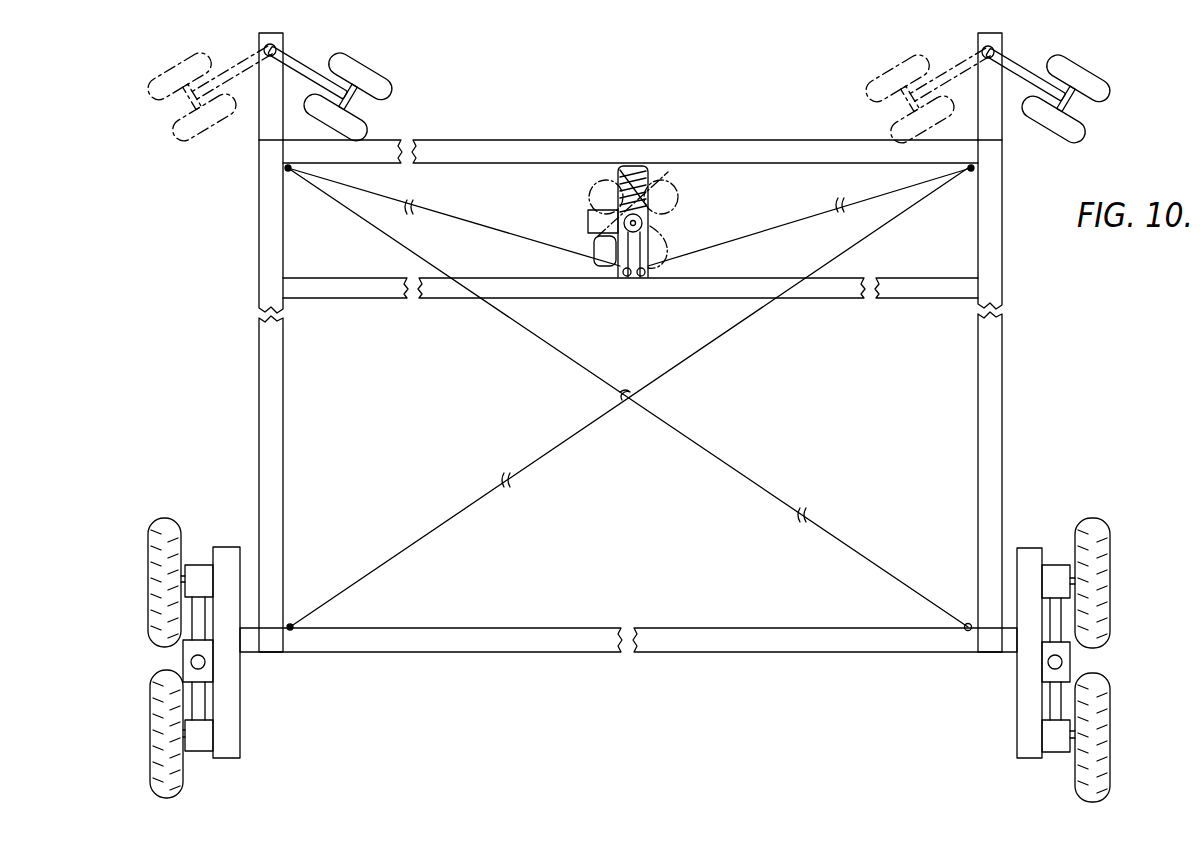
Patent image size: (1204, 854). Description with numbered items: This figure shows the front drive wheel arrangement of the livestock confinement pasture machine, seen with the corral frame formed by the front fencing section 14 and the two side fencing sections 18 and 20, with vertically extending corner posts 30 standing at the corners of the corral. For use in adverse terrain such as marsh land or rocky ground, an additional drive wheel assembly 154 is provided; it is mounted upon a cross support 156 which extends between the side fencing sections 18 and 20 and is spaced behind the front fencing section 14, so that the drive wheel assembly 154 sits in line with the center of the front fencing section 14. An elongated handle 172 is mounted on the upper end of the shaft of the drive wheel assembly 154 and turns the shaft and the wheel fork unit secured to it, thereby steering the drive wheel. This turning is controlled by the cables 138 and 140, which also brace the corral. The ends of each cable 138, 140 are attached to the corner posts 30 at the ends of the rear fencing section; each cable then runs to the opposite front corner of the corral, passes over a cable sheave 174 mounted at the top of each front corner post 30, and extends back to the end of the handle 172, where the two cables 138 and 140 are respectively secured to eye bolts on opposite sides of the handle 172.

The front fencing section 14 is at (513, 145).
The side fencing section 18 is at (992, 365).
The side fencing section 20 is at (259, 412).
The corner post 30 is at (291, 626).
The cable 138 is at (403, 551).
The cable 140 is at (757, 484).
The drive wheel assembly 154 is at (652, 170).
The cross support 156 is at (823, 294).
The handle 172 is at (650, 247).
The cable sheave 174 is at (287, 171).